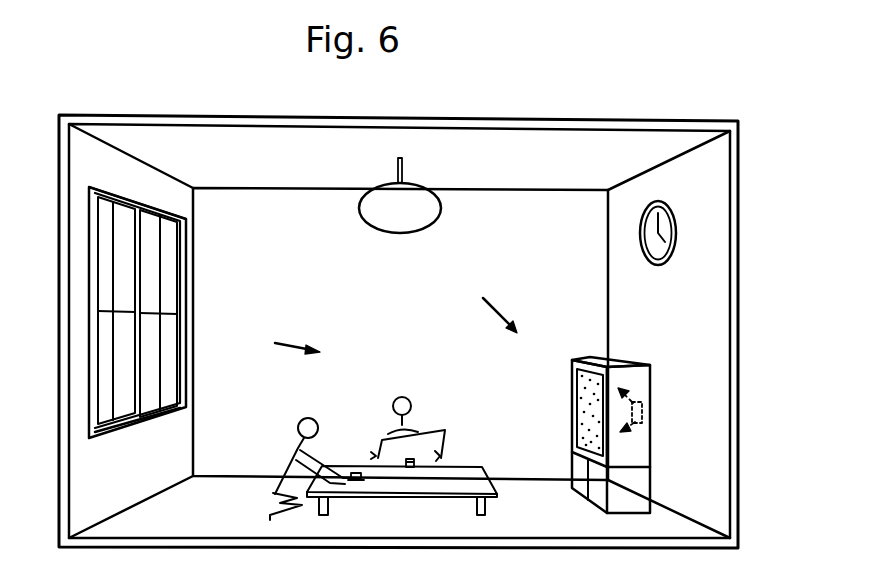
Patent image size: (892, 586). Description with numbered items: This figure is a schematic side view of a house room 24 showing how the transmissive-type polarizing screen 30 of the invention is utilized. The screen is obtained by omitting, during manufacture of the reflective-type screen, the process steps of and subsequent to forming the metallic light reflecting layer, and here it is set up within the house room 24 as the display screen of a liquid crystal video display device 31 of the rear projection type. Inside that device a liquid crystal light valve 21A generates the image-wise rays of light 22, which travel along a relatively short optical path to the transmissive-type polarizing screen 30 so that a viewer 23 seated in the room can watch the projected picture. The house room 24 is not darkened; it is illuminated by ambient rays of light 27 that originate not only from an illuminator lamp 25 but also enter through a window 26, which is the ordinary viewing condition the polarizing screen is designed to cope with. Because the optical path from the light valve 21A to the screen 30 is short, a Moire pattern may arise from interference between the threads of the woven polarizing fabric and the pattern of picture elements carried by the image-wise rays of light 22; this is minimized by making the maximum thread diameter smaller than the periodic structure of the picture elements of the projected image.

The liquid crystal light valve 21A is at (674, 377).
The image-wise rays of light 22 is at (668, 439).
The viewer 23 is at (280, 470).
The house room 24 is at (712, 171).
The illuminator lamp 25 is at (420, 218).
The window 26 is at (167, 239).
The ambient rays of light 27 is at (405, 314).
The transmissive-type polarizing screen 30 is at (583, 360).
The liquid crystal video display device 31 is at (628, 375).